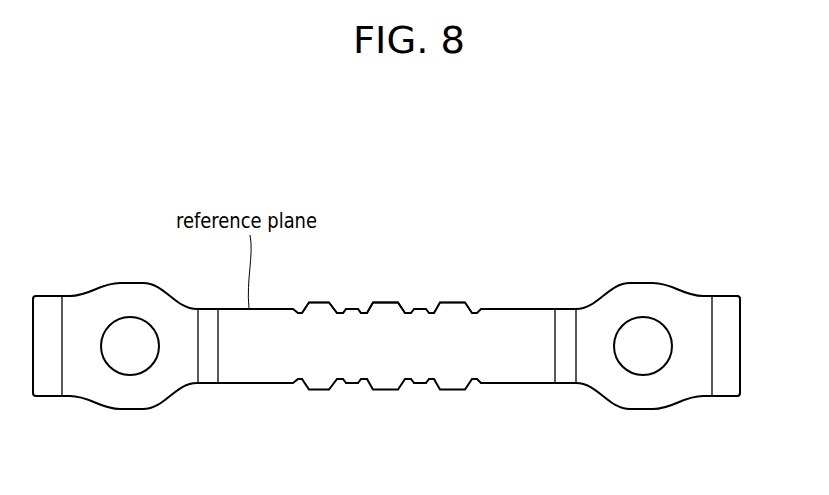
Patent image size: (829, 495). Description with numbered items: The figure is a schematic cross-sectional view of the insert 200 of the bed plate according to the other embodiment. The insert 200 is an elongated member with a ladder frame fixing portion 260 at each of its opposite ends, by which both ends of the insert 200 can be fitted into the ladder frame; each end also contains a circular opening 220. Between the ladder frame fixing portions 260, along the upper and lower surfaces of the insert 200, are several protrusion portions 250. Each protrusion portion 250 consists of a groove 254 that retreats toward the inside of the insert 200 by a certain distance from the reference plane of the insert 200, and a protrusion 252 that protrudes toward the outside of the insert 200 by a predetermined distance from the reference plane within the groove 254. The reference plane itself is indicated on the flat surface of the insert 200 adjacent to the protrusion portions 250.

The insert 200 is at (415, 141).
The coupling hole 220 is at (643, 356).
The protrusion portion 250 is at (447, 213).
The protrusion 252 is at (387, 303).
The groove 254 is at (364, 311).
The ladder frame fixing portion 260 is at (732, 343).